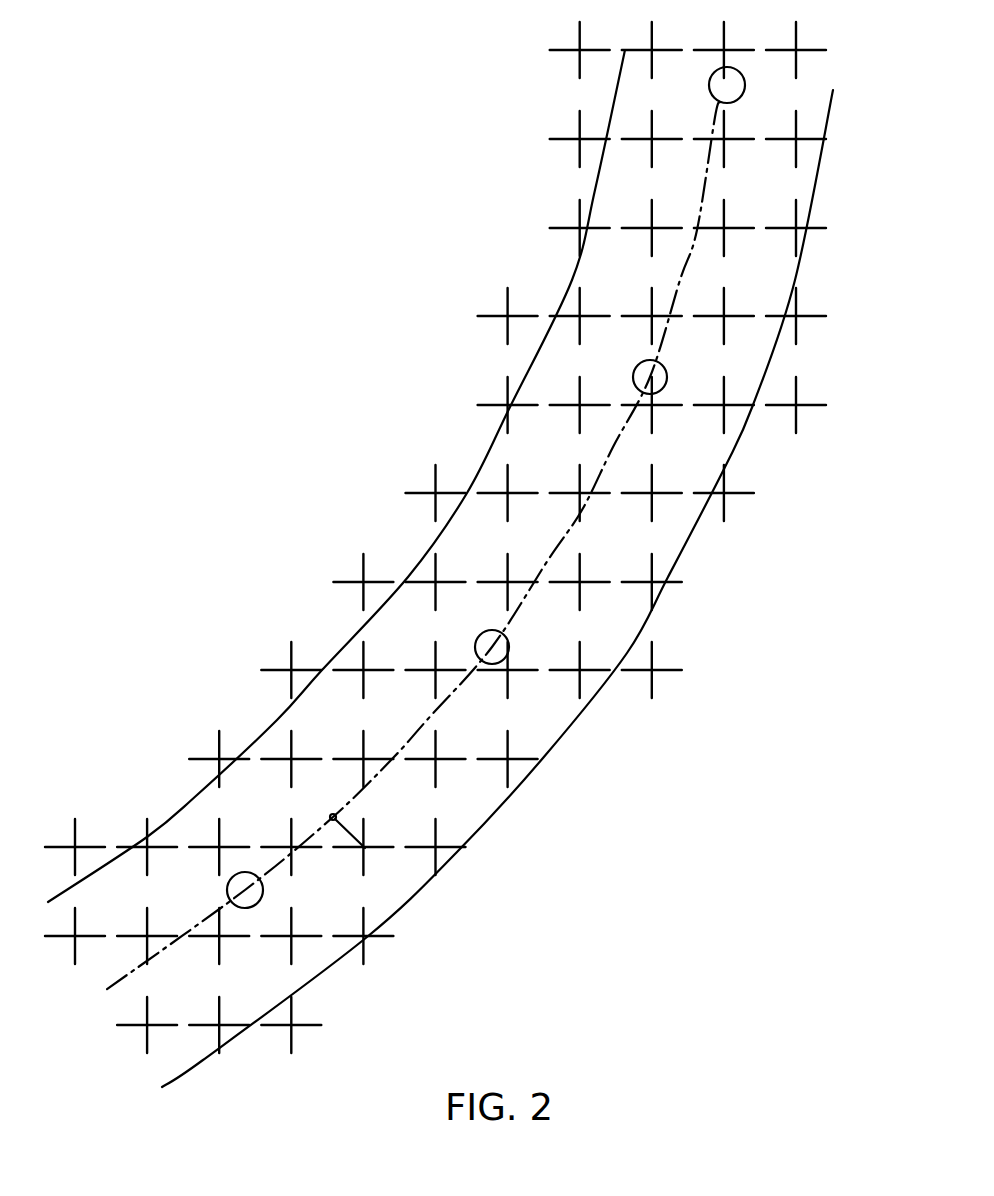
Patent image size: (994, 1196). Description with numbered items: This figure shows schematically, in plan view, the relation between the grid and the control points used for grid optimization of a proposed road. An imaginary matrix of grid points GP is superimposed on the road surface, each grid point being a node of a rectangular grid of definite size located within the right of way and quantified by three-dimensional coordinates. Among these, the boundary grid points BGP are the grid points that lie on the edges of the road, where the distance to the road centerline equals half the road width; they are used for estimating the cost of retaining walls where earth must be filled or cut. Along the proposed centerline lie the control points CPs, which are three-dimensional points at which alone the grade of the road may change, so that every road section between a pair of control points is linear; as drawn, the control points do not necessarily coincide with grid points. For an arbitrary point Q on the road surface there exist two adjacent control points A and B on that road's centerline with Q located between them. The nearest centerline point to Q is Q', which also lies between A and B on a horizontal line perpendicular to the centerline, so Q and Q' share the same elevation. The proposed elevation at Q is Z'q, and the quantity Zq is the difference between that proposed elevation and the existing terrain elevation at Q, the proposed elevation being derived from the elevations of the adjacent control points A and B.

The grid points GP is at (694, 157).
The boundary grid points BGP is at (490, 409).
The control points CPs is at (97, 515).
The control point A is at (231, 878).
The control point B is at (485, 621).
The arbitrary point on the road surface Q is at (381, 823).
The nearest point on the road centerline Q' is at (335, 809).
The elevation difference at point Q Zq is at (303, 813).
The proposed elevation of point Q Z'q is at (386, 915).